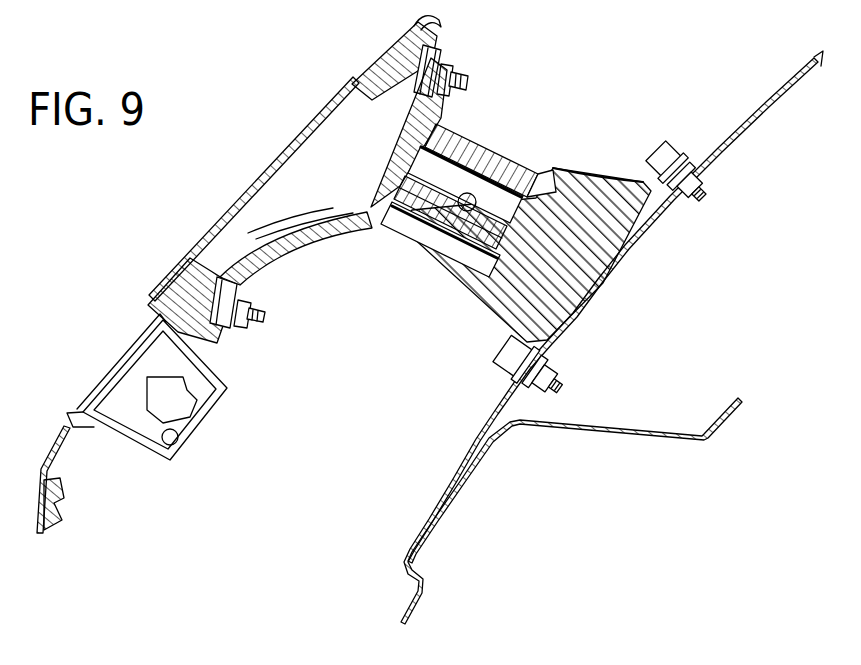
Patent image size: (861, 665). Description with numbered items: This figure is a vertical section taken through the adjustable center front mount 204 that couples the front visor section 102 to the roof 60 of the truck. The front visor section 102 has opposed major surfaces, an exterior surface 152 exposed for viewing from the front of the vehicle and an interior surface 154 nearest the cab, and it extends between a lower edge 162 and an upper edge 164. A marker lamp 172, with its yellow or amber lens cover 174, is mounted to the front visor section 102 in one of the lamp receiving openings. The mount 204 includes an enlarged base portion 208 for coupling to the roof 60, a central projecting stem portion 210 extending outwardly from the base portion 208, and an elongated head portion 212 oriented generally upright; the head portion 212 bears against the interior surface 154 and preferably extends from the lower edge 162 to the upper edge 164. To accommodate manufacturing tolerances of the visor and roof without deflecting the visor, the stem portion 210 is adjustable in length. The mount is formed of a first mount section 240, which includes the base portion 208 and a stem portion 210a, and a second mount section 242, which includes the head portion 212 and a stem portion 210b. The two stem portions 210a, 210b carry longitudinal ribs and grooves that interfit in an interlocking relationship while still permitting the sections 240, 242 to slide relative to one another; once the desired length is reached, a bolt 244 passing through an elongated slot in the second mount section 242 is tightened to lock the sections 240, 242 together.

The roof 60 is at (754, 108).
The front visor section 102 is at (283, 151).
The exterior surface 152 is at (350, 82).
The interior surface 154 is at (274, 168).
The lower edge 162 is at (44, 530).
The upper edge 164 is at (440, 23).
The marker lamp 172 is at (133, 402).
The lens cover 174 is at (110, 358).
The central mount 204 is at (437, 322).
The base portion 208 is at (686, 146).
The stem portion 210 is at (525, 150).
The stem portion 210a is at (462, 262).
The stem portion 210b is at (452, 118).
The head portion 212 is at (297, 258).
The first mount section 240 is at (595, 173).
The second mount section 242 is at (450, 134).
The bolt 244 is at (457, 226).